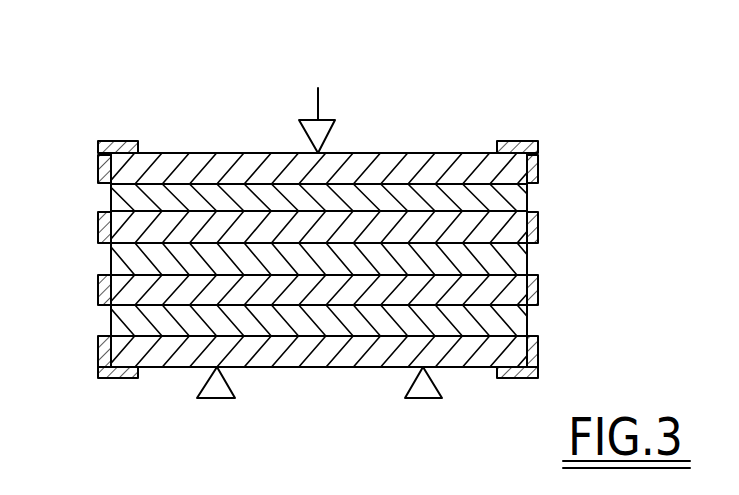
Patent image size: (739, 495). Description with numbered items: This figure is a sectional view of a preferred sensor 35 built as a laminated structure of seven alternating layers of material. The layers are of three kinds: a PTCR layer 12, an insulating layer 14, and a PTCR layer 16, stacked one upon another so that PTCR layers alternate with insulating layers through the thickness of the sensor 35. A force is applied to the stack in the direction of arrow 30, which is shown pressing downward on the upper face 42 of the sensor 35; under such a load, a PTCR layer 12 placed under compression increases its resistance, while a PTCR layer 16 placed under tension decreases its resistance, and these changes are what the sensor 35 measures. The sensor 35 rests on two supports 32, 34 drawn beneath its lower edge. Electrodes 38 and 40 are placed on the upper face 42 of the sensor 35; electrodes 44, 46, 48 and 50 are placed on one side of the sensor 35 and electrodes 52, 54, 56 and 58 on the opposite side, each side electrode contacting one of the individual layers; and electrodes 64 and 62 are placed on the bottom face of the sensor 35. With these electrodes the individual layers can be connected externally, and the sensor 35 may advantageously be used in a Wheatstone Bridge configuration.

The sensor 35 is at (154, 54).
The PTCR layer 12 is at (515, 168).
The insulating layer 14 is at (515, 198).
The PTCR layer 16 is at (515, 223).
The arrow 30 is at (318, 113).
The support 32 is at (235, 390).
The support 34 is at (405, 385).
The electrode 38 is at (120, 141).
The electrode 40 is at (518, 141).
The upper face 42 is at (449, 153).
The electrode 44 is at (98, 165).
The electrode 46 is at (98, 230).
The electrode 48 is at (98, 289).
The electrode 50 is at (98, 350).
The electrode 52 is at (530, 173).
The electrode 54 is at (530, 237).
The electrode 56 is at (530, 297).
The electrode 58 is at (538, 362).
The electrode 62 is at (125, 378).
The electrode 64 is at (515, 378).